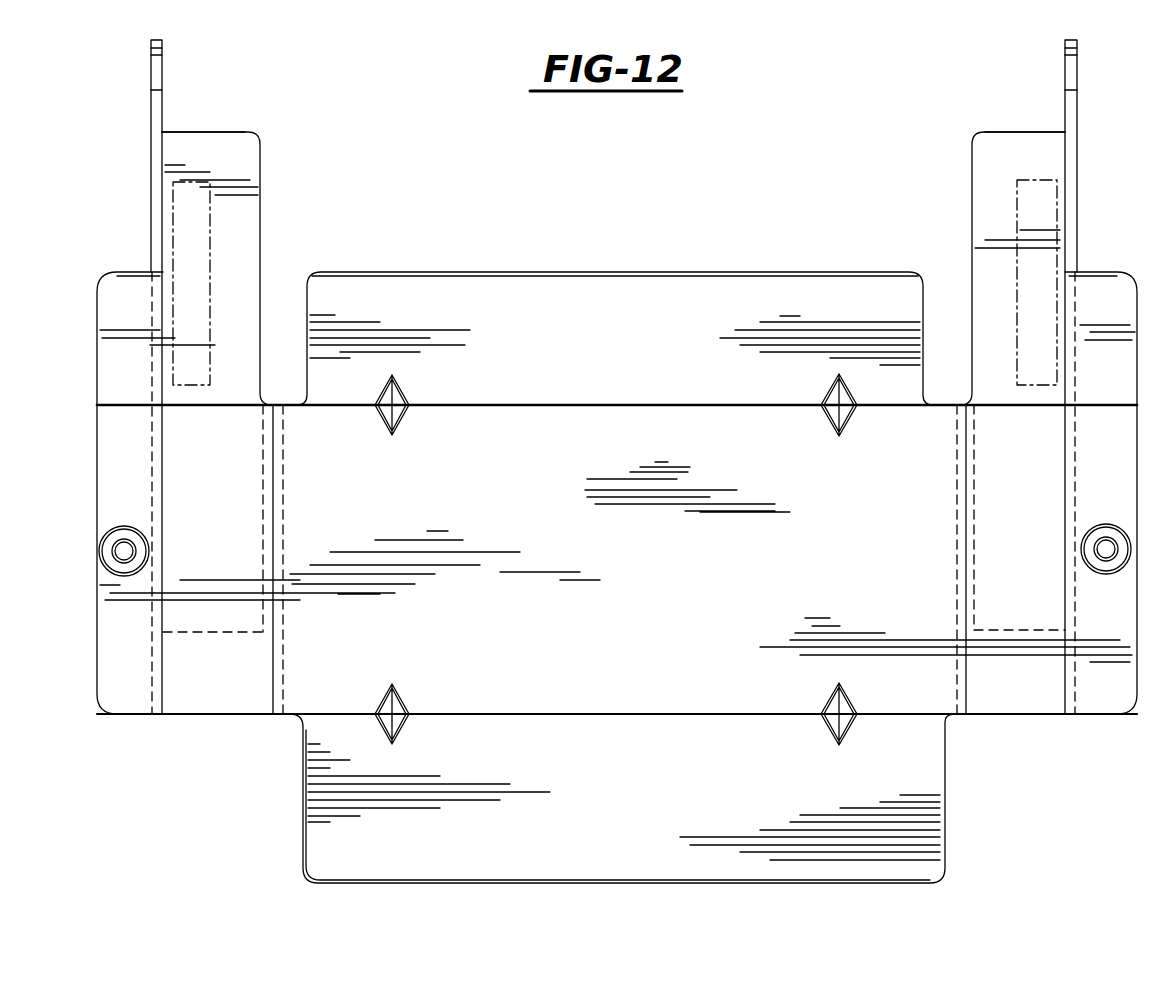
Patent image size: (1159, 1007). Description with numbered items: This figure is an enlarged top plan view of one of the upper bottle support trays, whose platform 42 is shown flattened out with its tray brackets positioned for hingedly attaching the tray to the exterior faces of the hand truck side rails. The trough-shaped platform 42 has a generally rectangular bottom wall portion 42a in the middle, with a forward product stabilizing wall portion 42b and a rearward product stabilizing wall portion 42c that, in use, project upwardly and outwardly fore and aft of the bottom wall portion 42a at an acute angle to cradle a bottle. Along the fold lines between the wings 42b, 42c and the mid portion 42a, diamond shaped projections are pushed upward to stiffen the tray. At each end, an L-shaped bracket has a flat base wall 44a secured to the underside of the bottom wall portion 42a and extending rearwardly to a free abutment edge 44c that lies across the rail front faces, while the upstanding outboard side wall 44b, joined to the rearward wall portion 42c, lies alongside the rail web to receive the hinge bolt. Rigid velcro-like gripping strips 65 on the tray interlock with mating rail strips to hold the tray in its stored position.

The platform 42 is at (950, 729).
The bottom wall portion 42a is at (700, 435).
The forward product stabilizing wall portion 42b is at (930, 825).
The rearward product stabilizing wall portion 42c is at (843, 290).
The base wall 44a is at (258, 236).
The side wall 44b is at (163, 121).
The free abutment edge 44c is at (240, 134).
The gripping strip 65 is at (1017, 228).